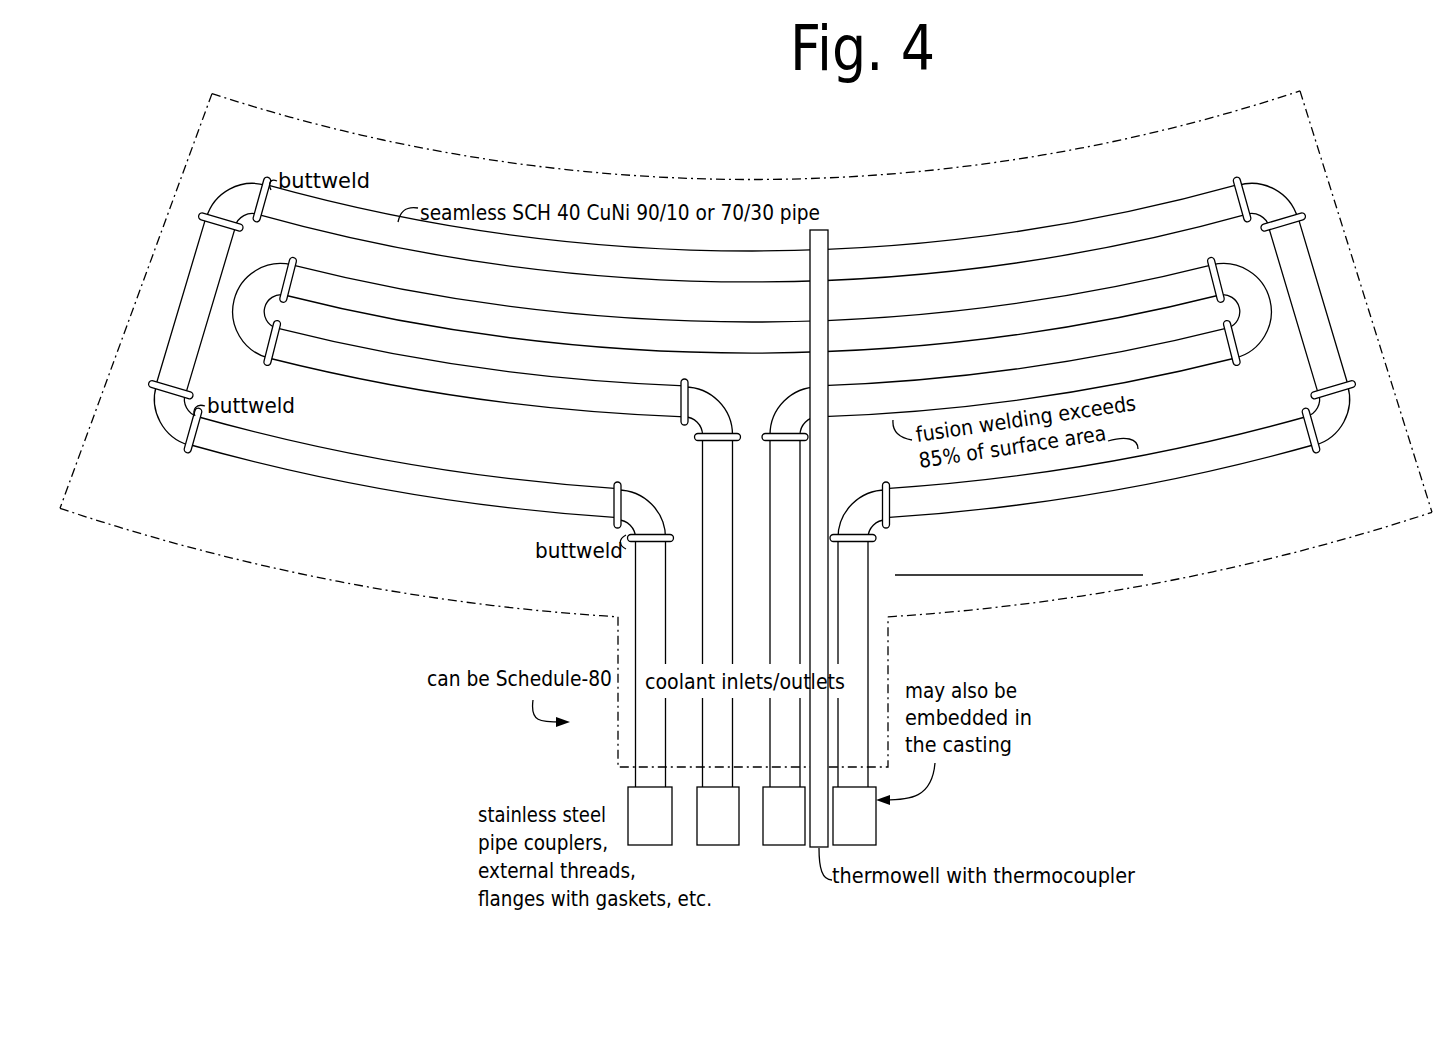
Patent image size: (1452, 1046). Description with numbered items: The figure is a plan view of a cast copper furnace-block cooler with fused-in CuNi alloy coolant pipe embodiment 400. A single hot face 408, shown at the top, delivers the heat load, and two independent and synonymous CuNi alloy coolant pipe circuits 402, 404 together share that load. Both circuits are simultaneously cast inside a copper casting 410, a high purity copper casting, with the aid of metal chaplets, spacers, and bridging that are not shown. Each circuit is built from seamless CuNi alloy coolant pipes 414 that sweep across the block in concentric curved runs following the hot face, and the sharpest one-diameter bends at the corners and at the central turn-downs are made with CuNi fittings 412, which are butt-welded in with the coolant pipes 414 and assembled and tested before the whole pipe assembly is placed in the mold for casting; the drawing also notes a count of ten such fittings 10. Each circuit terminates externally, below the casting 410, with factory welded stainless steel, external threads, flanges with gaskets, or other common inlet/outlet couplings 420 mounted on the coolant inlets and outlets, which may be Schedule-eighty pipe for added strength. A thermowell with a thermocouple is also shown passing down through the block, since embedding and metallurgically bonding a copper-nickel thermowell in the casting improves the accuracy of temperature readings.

The cast copper furnace-block cooler and fused-in CuNi alloy coolant pipe embodiment 400 is at (450, 108).
The hot face 408 is at (848, 180).
The copper casting 410 is at (1108, 534).
The CuNi fittings 412 is at (224, 201).
The CuNi alloy coolant pipes 414 is at (785, 285).
The CuNi alloy coolant pipe circuit 402 is at (513, 438).
The CuNi alloy coolant pipe circuit 404 is at (424, 522).
The inlet/outlet couplings 420 is at (668, 825).
The seamless CuNi fittings 10 is at (1262, 182).